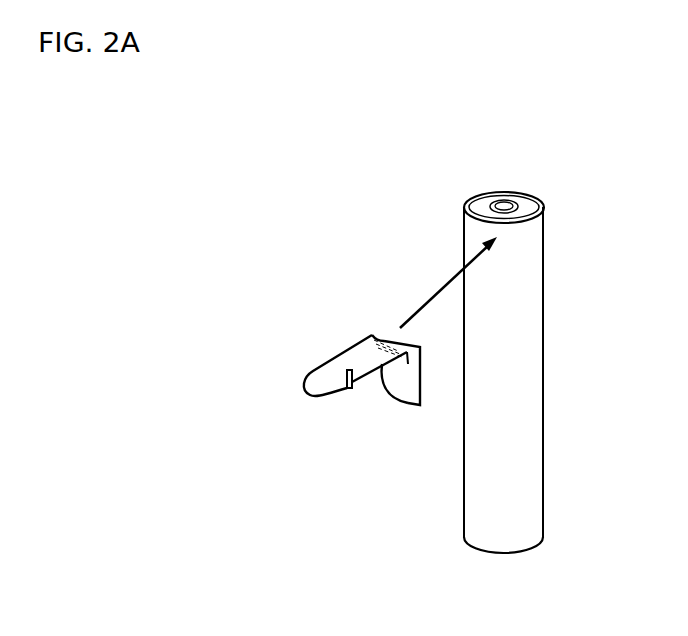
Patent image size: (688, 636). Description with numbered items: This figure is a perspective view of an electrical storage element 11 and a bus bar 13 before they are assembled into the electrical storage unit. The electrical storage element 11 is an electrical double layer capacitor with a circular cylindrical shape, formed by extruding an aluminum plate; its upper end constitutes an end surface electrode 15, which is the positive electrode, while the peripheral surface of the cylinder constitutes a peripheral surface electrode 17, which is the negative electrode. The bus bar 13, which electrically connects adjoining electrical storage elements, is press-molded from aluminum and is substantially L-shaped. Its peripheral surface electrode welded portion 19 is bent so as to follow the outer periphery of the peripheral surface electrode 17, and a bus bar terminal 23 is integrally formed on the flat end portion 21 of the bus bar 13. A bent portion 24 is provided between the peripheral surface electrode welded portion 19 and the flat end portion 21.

The electrical storage element 11 is at (557, 348).
The bus bar 13 is at (328, 357).
The end surface electrode 15 is at (517, 201).
The peripheral surface electrode 17 is at (525, 477).
The peripheral surface electrode welded portion 19 is at (396, 380).
The flat end portion 21 is at (347, 352).
The bus bar terminal 23 is at (335, 373).
The bent portion 24 is at (373, 332).